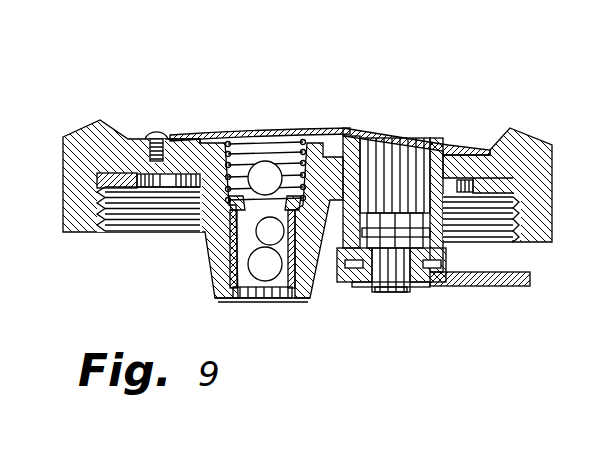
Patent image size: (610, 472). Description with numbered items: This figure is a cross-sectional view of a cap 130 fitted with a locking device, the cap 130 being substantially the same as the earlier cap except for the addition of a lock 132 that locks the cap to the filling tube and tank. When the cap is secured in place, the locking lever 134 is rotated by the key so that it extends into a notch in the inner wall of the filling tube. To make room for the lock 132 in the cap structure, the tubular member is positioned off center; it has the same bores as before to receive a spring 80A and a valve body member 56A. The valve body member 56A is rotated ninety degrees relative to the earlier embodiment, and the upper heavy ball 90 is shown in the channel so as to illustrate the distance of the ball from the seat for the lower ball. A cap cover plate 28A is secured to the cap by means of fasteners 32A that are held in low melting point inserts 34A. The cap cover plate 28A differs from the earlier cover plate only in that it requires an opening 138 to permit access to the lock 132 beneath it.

The cap cover plate 28A is at (206, 137).
The fasteners 32A is at (158, 134).
The low melting point inserts 34A is at (174, 137).
The valve body member 56A is at (262, 302).
The spring 80A is at (258, 138).
The upper heavy ball 90 is at (265, 178).
The cap 130 is at (440, 109).
The lock 132 is at (370, 289).
The locking lever 134 is at (531, 279).
The opening 138 is at (360, 128).